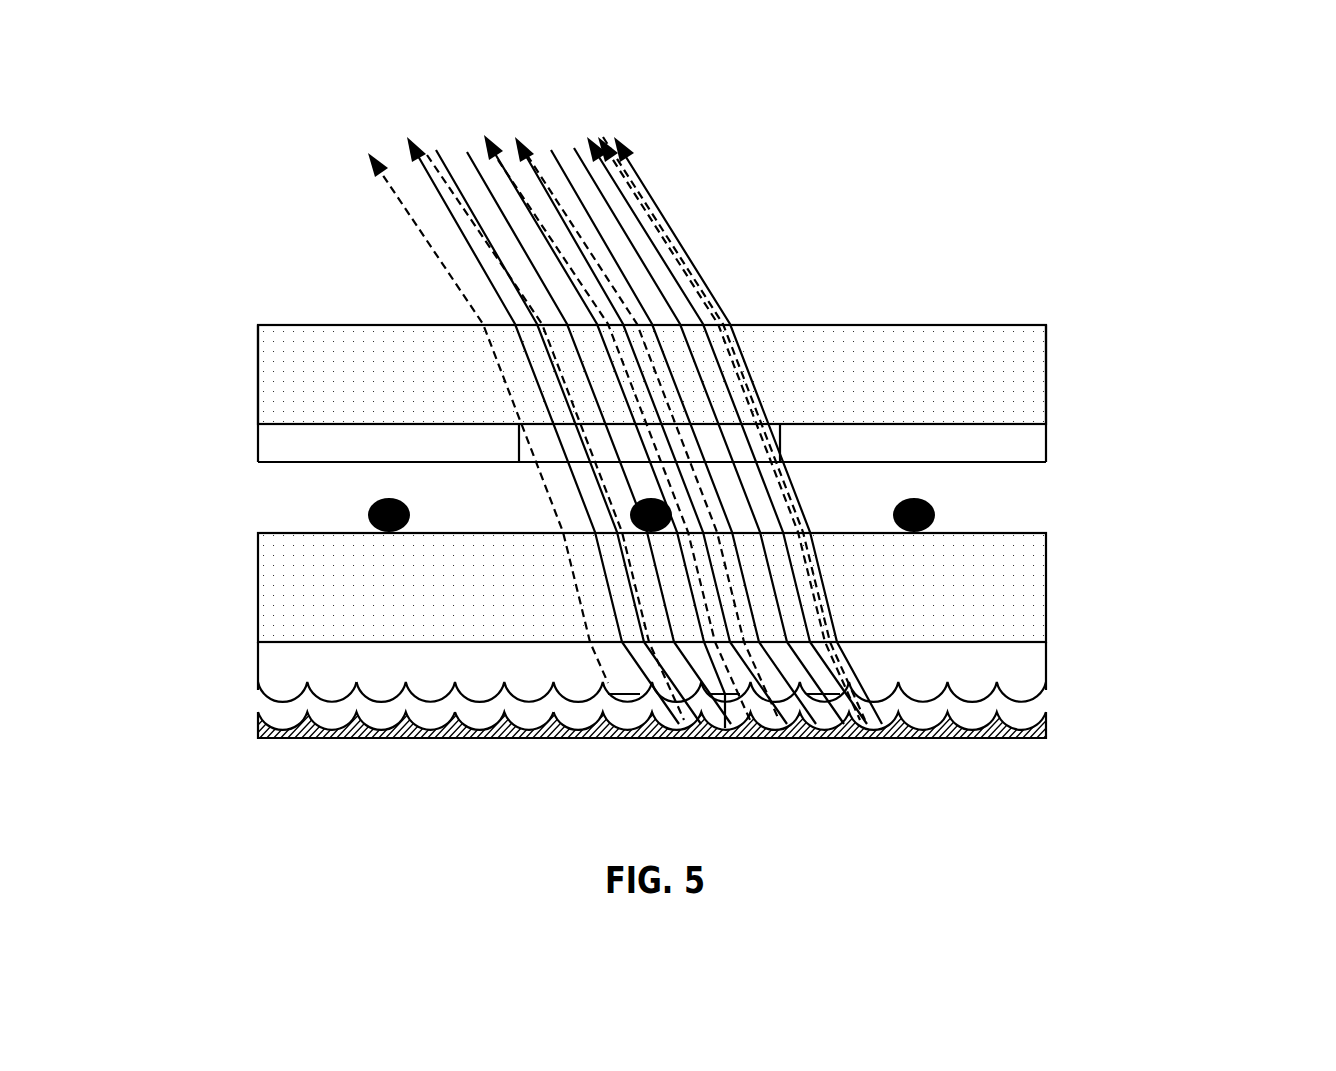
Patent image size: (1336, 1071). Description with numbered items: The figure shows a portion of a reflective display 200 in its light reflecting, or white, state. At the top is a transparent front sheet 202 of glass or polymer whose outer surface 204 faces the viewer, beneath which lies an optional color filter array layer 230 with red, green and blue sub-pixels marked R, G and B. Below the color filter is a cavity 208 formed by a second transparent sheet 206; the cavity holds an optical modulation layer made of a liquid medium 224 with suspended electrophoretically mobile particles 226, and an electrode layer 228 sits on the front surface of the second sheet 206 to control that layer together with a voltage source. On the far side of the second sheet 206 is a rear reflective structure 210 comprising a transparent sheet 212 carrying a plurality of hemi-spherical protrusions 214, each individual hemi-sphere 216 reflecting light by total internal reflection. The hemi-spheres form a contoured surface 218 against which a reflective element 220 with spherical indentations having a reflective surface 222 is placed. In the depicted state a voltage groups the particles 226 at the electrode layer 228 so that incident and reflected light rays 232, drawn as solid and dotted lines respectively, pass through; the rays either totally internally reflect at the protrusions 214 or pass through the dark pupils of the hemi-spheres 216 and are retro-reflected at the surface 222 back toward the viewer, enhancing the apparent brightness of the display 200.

The display 200 is at (993, 300).
The transparent front sheet 202 is at (362, 394).
The outer surface 204 is at (293, 325).
The second transparent sheet 206 is at (362, 609).
The cavity 208 is at (245, 467).
The rear reflective structure 210 is at (1150, 638).
The transparent sheet 212 is at (362, 680).
The hemi-spherical protrusions 214 is at (1057, 672).
The hemi-sphere 216 is at (294, 683).
The contoured surface 218 is at (332, 702).
The reflective element 220 is at (973, 738).
The reflective surface 222 is at (480, 723).
The liquid medium 224 is at (447, 517).
The electrophoretically mobile particles 226 is at (368, 511).
The electrode layer 228 is at (1018, 533).
The color filter array layer 230 is at (1062, 424).
The light rays 232 is at (360, 133).